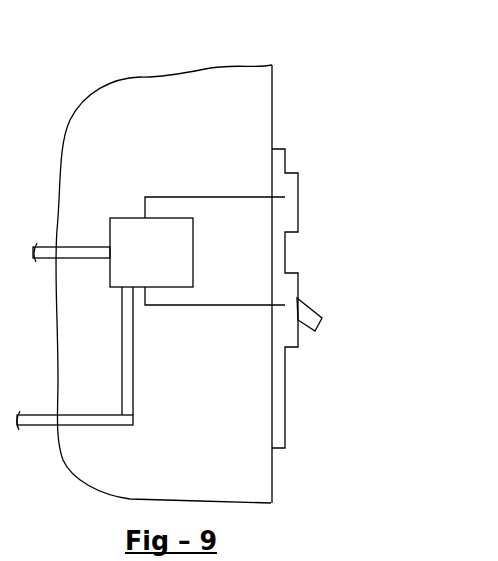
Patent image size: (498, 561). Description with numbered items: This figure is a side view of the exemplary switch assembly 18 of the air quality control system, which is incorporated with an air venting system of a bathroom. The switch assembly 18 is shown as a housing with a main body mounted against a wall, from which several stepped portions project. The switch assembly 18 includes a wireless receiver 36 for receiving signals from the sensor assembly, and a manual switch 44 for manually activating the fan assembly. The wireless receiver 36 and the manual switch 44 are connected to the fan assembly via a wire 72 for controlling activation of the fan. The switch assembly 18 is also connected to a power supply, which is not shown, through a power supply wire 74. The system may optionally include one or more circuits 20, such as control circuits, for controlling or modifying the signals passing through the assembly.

The switch assembly 18 is at (131, 190).
The circuit 20 is at (121, 271).
The wireless receiver 36 is at (298, 190).
The manual switch 44 is at (320, 312).
The wire 72 is at (78, 247).
The power supply wire 74 is at (78, 427).